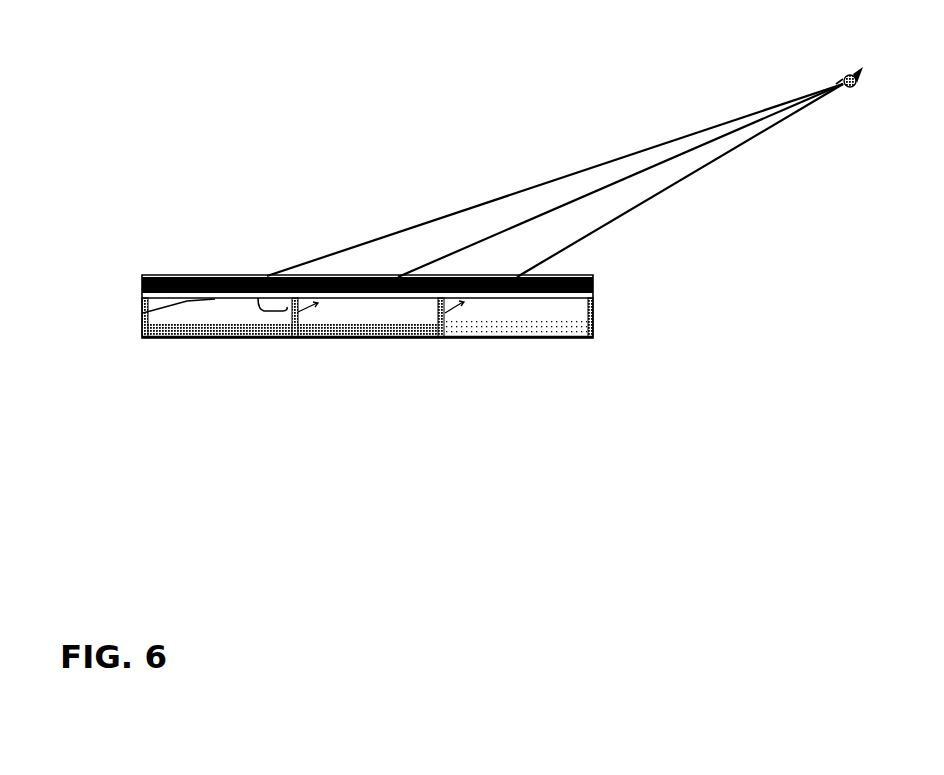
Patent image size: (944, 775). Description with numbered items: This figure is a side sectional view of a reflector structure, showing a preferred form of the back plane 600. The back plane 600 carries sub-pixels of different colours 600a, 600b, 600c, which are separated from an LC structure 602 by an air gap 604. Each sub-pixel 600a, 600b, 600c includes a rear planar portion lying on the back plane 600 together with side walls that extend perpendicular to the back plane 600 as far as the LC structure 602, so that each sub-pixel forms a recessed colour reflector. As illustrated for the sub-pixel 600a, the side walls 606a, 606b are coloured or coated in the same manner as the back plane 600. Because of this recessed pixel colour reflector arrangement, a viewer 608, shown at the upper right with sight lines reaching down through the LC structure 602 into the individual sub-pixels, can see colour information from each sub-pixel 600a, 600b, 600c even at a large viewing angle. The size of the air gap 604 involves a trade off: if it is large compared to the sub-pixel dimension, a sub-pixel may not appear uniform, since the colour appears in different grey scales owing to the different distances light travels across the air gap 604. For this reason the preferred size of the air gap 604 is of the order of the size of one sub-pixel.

The back plane 600 is at (142, 338).
The sub-pixel 600a is at (225, 345).
The sub-pixel 600b is at (367, 345).
The sub-pixel 600c is at (513, 345).
The LC structure 602 is at (593, 288).
The air gap 604 is at (572, 312).
The side wall 606a is at (141, 312).
The side wall 606b is at (250, 277).
The viewer 608 is at (863, 72).